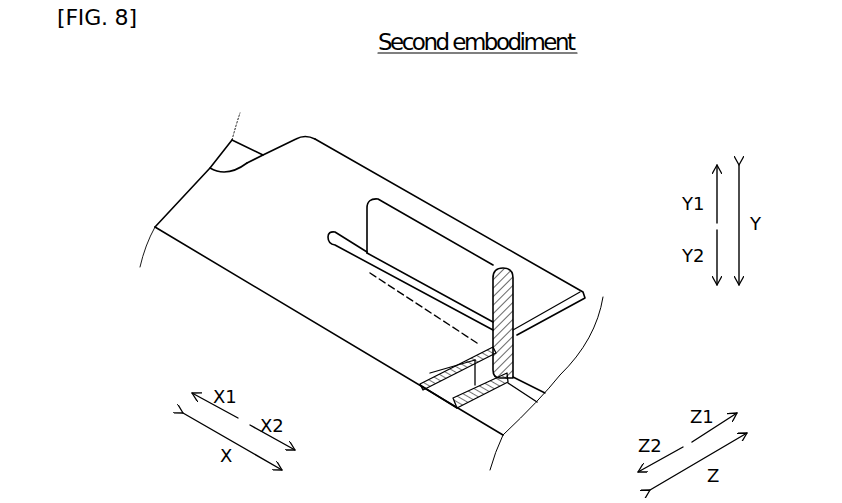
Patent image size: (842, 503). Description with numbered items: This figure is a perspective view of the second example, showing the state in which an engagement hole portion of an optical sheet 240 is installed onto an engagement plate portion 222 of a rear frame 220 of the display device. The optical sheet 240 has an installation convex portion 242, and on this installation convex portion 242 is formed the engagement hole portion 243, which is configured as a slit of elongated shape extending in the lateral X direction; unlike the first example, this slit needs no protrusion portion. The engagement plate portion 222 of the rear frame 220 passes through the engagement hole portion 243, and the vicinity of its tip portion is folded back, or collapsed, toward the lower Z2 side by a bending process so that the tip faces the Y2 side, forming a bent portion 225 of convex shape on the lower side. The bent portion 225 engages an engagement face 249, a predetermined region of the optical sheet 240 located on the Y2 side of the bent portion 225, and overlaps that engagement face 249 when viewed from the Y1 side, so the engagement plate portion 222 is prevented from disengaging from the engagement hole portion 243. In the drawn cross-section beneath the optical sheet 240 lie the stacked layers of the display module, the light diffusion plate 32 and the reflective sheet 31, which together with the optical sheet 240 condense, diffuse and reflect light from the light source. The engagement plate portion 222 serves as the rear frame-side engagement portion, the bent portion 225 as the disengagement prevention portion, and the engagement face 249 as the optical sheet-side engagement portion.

The rear frame 220 is at (230, 152).
The engagement hole portion 243 is at (340, 253).
The bent portion 225 is at (392, 253).
The installation convex portion 242 is at (538, 280).
The optical sheet 240 is at (210, 232).
The engagement face 249 is at (417, 300).
The light diffusion plate 32 is at (437, 407).
The reflective sheet 31 is at (477, 408).
The engagement plate portion 222 is at (550, 317).